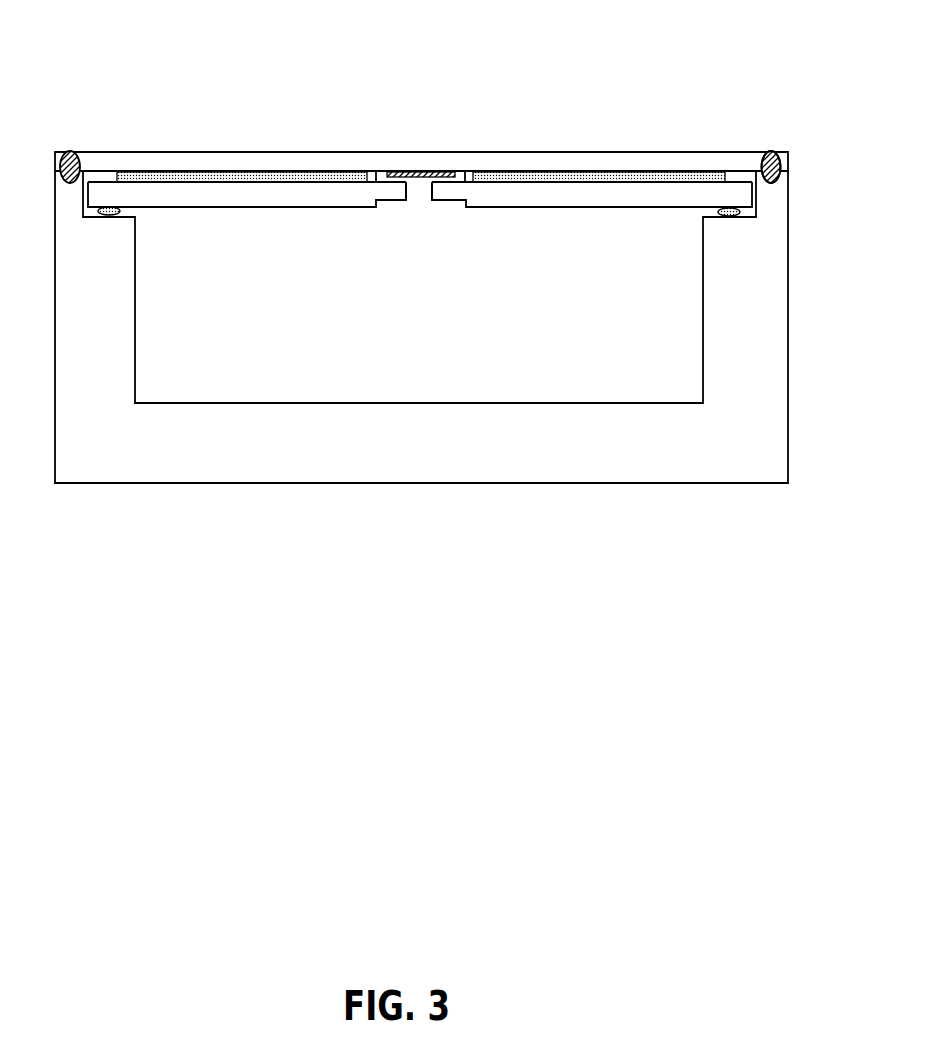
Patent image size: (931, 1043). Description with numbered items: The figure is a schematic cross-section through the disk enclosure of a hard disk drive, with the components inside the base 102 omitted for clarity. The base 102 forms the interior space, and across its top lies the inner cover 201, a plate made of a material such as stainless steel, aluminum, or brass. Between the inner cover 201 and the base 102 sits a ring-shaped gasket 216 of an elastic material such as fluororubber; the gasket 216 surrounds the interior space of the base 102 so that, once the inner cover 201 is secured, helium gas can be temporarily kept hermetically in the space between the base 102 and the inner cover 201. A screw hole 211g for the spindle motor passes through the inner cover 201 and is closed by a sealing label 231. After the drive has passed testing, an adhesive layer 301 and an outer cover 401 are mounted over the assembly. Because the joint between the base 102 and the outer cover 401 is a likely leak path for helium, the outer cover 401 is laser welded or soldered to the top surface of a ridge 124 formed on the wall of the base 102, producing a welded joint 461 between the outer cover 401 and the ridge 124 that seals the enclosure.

The base 102 is at (308, 483).
The ridge 124 is at (81, 171).
The inner cover 201 is at (586, 207).
The screw hole 211g is at (429, 178).
The gasket 216 is at (110, 216).
The sealing label 231 is at (419, 178).
The adhesive layer 301 is at (742, 171).
The outer cover 401 is at (533, 152).
The welded joint 461 is at (767, 151).